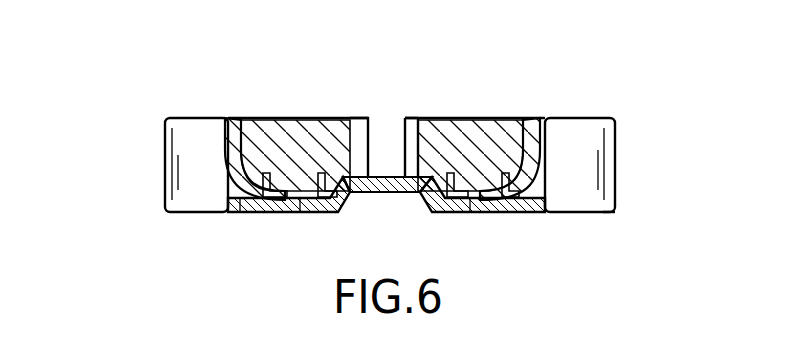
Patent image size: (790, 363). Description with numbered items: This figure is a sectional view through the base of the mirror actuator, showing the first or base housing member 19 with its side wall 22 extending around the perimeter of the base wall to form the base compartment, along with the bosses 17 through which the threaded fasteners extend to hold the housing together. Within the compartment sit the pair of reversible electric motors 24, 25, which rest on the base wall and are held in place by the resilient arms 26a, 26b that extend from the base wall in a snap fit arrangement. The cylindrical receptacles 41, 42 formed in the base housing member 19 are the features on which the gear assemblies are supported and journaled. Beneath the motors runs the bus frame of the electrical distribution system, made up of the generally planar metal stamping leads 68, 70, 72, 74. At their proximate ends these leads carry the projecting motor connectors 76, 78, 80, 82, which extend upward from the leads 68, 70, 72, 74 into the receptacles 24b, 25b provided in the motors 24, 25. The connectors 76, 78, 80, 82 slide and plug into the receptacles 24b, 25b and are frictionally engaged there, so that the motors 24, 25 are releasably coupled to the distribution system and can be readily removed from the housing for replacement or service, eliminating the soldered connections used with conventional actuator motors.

The bosses 17 is at (490, 212).
The base housing member 19 is at (585, 128).
The side wall 22 is at (228, 150).
The reversible electric motor 24 is at (490, 117).
The receptacle 24b is at (462, 117).
The reversible electric motor 25 is at (298, 117).
The receptacle 25b is at (268, 117).
The resilient arm 26a is at (408, 117).
The resilient arm 26b is at (370, 117).
The cylindrical receptacle 41 is at (595, 135).
The cylindrical receptacle 42 is at (200, 106).
The lead 68 is at (270, 211).
The lead 70 is at (293, 212).
The lead 72 is at (470, 212).
The lead 74 is at (530, 212).
The motor connector 76 is at (262, 191).
The motor connector 78 is at (348, 212).
The motor connector 80 is at (411, 212).
The motor connector 82 is at (604, 213).